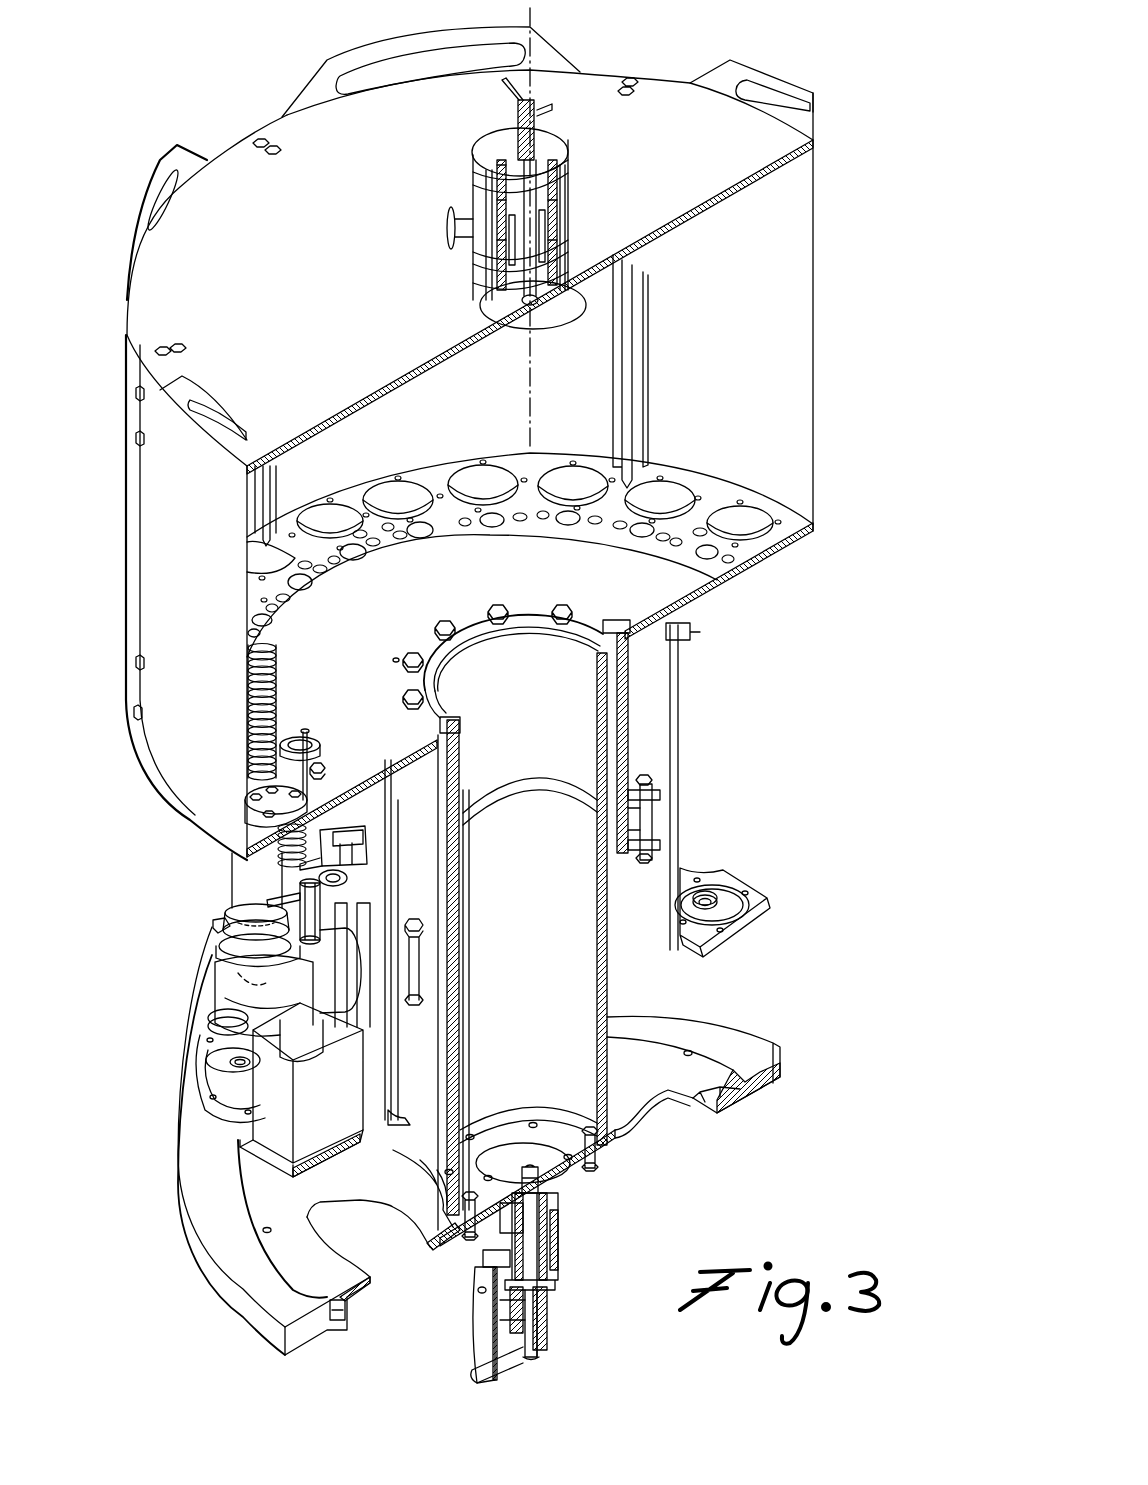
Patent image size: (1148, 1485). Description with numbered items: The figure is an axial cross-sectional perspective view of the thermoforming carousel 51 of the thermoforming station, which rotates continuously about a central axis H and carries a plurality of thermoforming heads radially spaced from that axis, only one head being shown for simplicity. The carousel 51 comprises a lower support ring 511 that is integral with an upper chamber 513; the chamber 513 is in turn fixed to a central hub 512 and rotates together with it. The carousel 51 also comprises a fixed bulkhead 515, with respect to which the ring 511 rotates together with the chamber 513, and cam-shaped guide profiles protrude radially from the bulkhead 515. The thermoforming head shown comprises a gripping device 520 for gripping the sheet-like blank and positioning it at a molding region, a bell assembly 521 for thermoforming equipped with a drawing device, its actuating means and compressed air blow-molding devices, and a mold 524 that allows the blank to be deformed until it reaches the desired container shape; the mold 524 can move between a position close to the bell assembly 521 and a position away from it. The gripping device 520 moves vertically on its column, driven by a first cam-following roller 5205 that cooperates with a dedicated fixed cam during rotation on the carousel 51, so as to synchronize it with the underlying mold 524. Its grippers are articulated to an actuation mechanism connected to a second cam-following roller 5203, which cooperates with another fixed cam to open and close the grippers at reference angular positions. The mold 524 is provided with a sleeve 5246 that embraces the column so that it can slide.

The central axis H is at (533, 12).
The thermoforming carousel 51 is at (756, 866).
The lower support ring 511 is at (748, 938).
The central hub 512 is at (612, 1008).
The upper chamber 513 is at (820, 392).
The fixed bulkhead 515 is at (684, 720).
The gripping device 520 is at (204, 925).
The bell assembly 521 is at (248, 893).
The mold 524 is at (240, 988).
The second cam-following roller 5203 is at (368, 848).
The first cam-following roller 5205 is at (342, 887).
The sleeve 5246 is at (302, 1040).